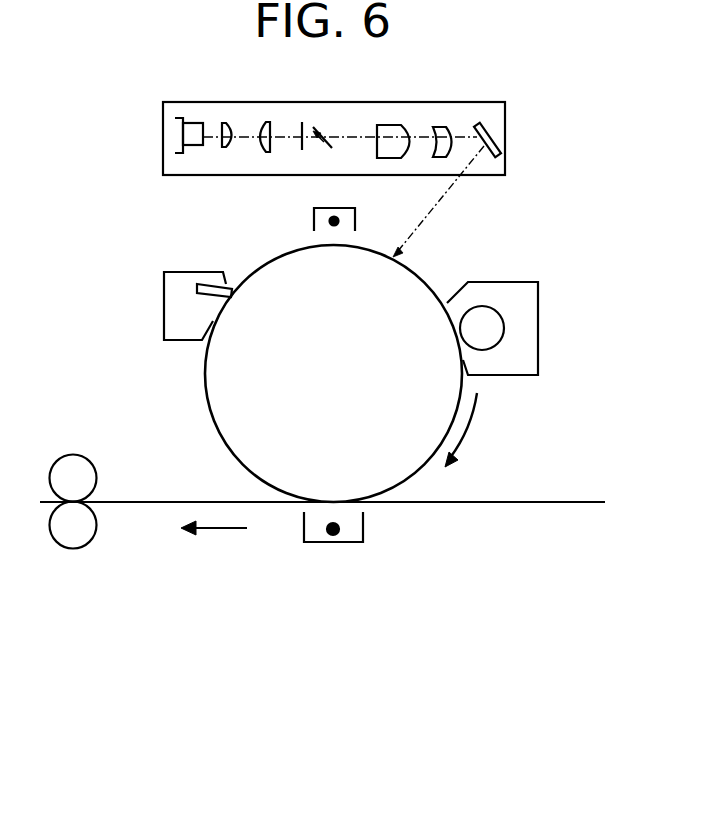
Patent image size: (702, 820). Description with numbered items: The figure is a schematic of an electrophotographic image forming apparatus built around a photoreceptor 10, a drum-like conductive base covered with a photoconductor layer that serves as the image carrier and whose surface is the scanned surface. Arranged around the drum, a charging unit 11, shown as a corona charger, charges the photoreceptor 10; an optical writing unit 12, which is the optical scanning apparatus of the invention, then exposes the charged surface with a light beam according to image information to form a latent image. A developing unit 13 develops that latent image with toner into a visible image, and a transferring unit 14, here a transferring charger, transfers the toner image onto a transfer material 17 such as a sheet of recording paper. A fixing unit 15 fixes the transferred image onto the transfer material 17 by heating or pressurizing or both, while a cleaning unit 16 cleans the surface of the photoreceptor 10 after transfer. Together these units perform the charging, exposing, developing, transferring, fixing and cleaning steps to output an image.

The photoreceptor 10 is at (213, 420).
The charging unit 11 is at (313, 217).
The optical writing unit 12 is at (506, 140).
The developing unit 13 is at (539, 328).
The transferring unit 14 is at (364, 529).
The fixing unit 15 is at (91, 562).
The cleaning unit 16 is at (163, 305).
The transfer material 17 is at (540, 502).